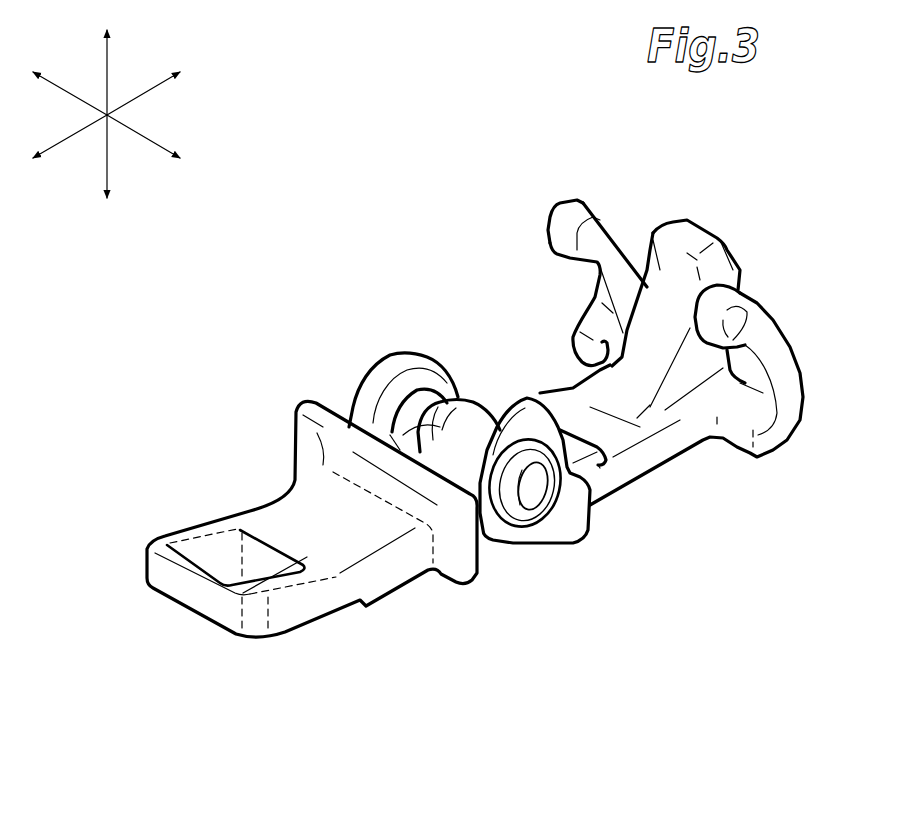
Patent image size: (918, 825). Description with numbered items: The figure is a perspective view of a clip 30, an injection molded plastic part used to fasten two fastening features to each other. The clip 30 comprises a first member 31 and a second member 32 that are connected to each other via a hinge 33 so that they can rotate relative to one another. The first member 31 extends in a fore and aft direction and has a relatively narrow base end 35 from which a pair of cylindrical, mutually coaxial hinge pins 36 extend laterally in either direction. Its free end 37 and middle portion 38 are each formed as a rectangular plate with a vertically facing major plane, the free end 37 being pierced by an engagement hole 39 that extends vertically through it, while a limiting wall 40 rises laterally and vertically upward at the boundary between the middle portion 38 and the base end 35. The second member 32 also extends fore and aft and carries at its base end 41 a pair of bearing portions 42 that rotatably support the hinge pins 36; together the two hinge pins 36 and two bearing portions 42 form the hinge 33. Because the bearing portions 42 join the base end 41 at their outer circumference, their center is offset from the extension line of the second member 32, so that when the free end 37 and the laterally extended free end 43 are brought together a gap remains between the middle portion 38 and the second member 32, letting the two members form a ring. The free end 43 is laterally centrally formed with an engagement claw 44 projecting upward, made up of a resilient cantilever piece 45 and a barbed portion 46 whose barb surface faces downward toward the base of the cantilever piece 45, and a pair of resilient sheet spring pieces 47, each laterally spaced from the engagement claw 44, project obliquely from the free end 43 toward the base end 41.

The clip 30 is at (430, 226).
The first member 31 is at (388, 606).
The second member 32 is at (656, 480).
The hinge 33 is at (540, 552).
The base end 35 is at (462, 410).
The hinge pins 36 is at (413, 407).
The free end 37 is at (172, 582).
The middle portion 38 is at (283, 510).
The engagement hole 39 is at (198, 552).
The limiting wall 40 is at (303, 430).
The base end 41 is at (593, 468).
The bearing portions 42 is at (409, 360).
The free end 43 is at (677, 408).
The engagement claw 44 is at (708, 220).
The cantilever piece 45 is at (646, 258).
The barbed portion 46 is at (727, 270).
The sheet spring pieces 47 is at (563, 230).